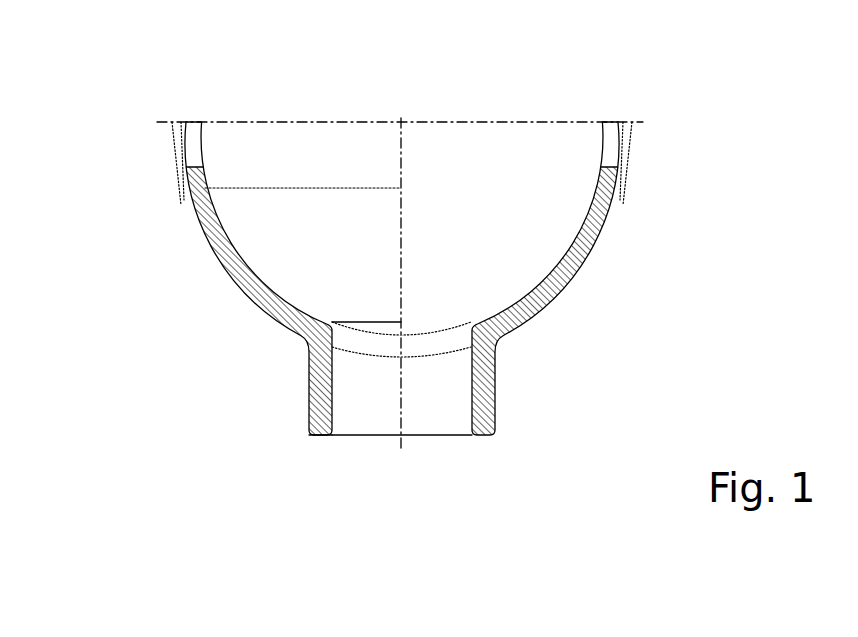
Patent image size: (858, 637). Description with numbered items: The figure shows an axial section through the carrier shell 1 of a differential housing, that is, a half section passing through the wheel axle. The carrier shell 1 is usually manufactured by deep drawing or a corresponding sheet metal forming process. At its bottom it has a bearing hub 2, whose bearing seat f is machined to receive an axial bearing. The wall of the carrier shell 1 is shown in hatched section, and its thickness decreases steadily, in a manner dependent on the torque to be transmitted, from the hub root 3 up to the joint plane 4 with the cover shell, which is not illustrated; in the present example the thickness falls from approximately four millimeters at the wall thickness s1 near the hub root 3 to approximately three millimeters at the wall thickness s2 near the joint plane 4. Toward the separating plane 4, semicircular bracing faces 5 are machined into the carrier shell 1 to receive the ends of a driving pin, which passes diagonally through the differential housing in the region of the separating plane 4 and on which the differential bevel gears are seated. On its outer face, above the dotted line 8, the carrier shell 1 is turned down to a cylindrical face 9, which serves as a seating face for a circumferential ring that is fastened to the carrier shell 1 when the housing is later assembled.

The carrier shell 1 is at (582, 253).
The bearing hub 2 is at (481, 417).
The hub root 3 is at (308, 340).
The joint plane 4 is at (495, 123).
The bracing faces 5 is at (612, 138).
The dotted line 8 is at (227, 188).
The cylindrical face 9 is at (617, 183).
The bearing seat f is at (308, 417).
The wall thickness at hub root s1 is at (520, 360).
The wall thickness at joint plane s2 is at (640, 205).